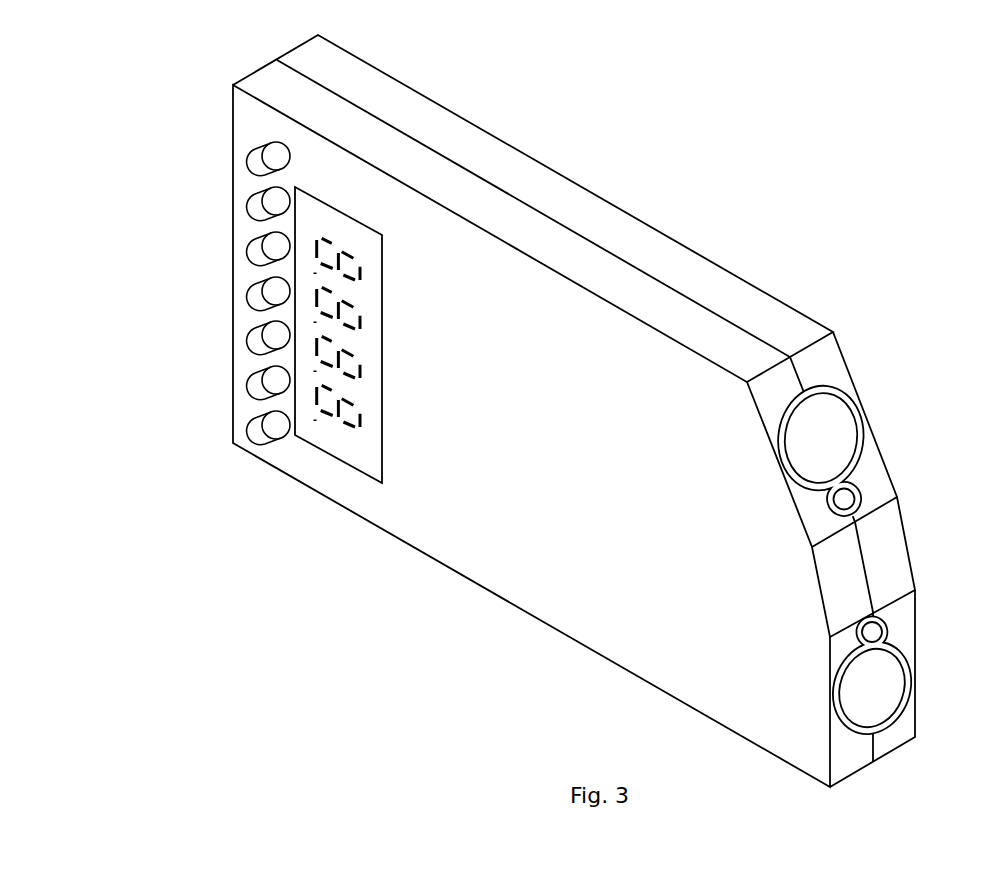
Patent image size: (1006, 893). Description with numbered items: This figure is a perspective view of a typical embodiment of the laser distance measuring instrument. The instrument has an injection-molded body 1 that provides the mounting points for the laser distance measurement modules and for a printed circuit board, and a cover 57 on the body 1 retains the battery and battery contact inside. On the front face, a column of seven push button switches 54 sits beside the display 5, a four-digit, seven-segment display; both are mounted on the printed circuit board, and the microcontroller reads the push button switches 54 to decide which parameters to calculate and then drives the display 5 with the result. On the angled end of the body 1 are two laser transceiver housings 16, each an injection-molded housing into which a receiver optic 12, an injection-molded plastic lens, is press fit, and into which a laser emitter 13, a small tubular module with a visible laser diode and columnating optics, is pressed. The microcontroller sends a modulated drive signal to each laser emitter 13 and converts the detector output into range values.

The body 1 is at (605, 220).
The display 5 is at (305, 238).
The receiver optic 12 is at (833, 422).
The laser emitter 13 is at (845, 502).
The laser transceiver housing 16 is at (858, 435).
The push button switches 54 is at (257, 163).
The cover 57 is at (632, 285).